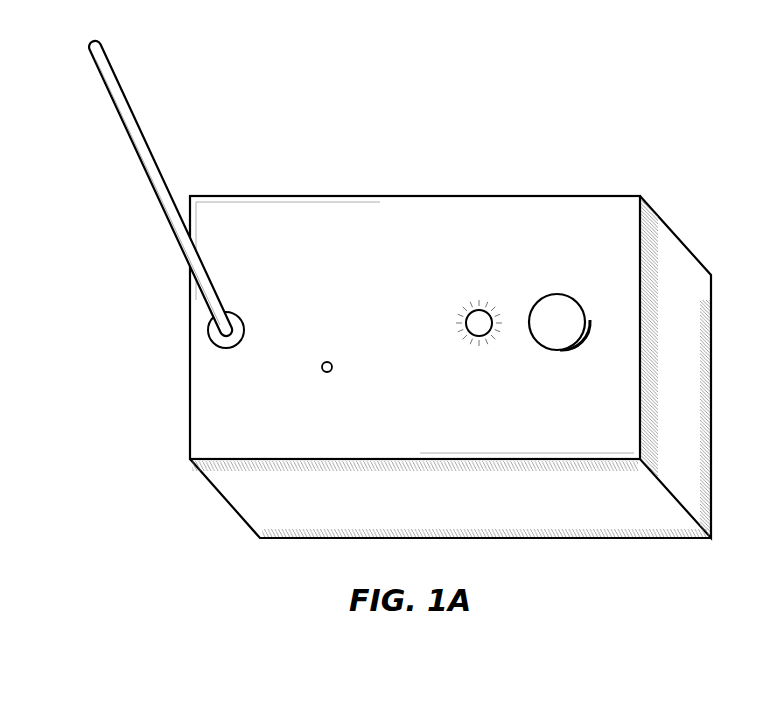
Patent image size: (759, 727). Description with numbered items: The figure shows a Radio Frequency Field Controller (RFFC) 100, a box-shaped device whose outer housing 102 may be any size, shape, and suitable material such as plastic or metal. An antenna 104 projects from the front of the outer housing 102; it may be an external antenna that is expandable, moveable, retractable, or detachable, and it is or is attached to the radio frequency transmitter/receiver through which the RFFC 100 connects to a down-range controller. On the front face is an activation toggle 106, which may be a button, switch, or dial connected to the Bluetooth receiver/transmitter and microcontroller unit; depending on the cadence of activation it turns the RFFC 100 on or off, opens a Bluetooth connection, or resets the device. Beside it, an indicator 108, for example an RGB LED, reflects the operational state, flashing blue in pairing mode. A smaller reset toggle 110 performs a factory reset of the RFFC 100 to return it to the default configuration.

The Radio Frequency Field Controller (RFFC) 100 is at (615, 101).
The outer housing 102 is at (602, 520).
The antenna 104 is at (123, 98).
The activation toggle 106 is at (543, 298).
The indicator 108 is at (471, 313).
The reset toggle 110 is at (321, 371).